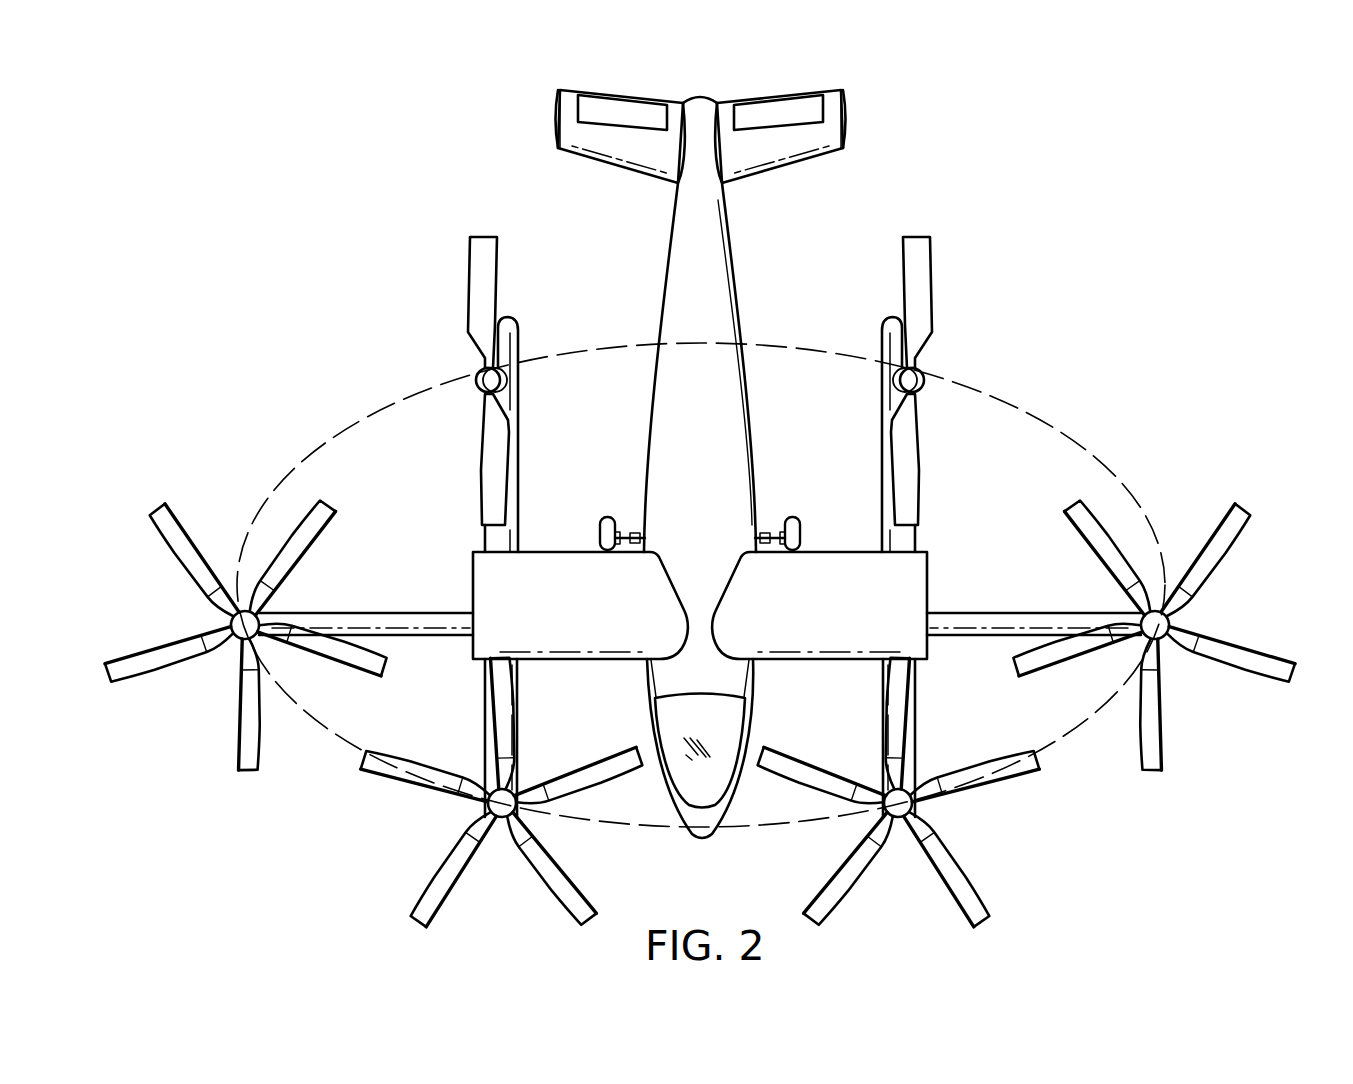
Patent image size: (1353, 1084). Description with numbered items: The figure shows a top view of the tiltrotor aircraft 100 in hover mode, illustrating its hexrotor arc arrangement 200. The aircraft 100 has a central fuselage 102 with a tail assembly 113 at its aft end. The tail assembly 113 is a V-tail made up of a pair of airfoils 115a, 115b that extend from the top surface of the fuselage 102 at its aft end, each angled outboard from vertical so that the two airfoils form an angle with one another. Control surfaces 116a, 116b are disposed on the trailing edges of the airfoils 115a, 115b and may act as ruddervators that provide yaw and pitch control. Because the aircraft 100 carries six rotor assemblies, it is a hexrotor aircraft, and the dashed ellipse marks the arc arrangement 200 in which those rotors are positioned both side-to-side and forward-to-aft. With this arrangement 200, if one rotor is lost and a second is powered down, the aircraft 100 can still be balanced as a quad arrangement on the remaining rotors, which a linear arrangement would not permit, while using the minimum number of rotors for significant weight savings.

The tiltrotor aircraft 100 is at (255, 130).
The fuselage 102 is at (742, 318).
The tail assembly 113 is at (870, 113).
The airfoil 115a is at (612, 168).
The airfoil 115b is at (788, 168).
The control surface 116a is at (625, 108).
The control surface 116b is at (776, 108).
The hexrotor arc arrangement 200 is at (1007, 403).